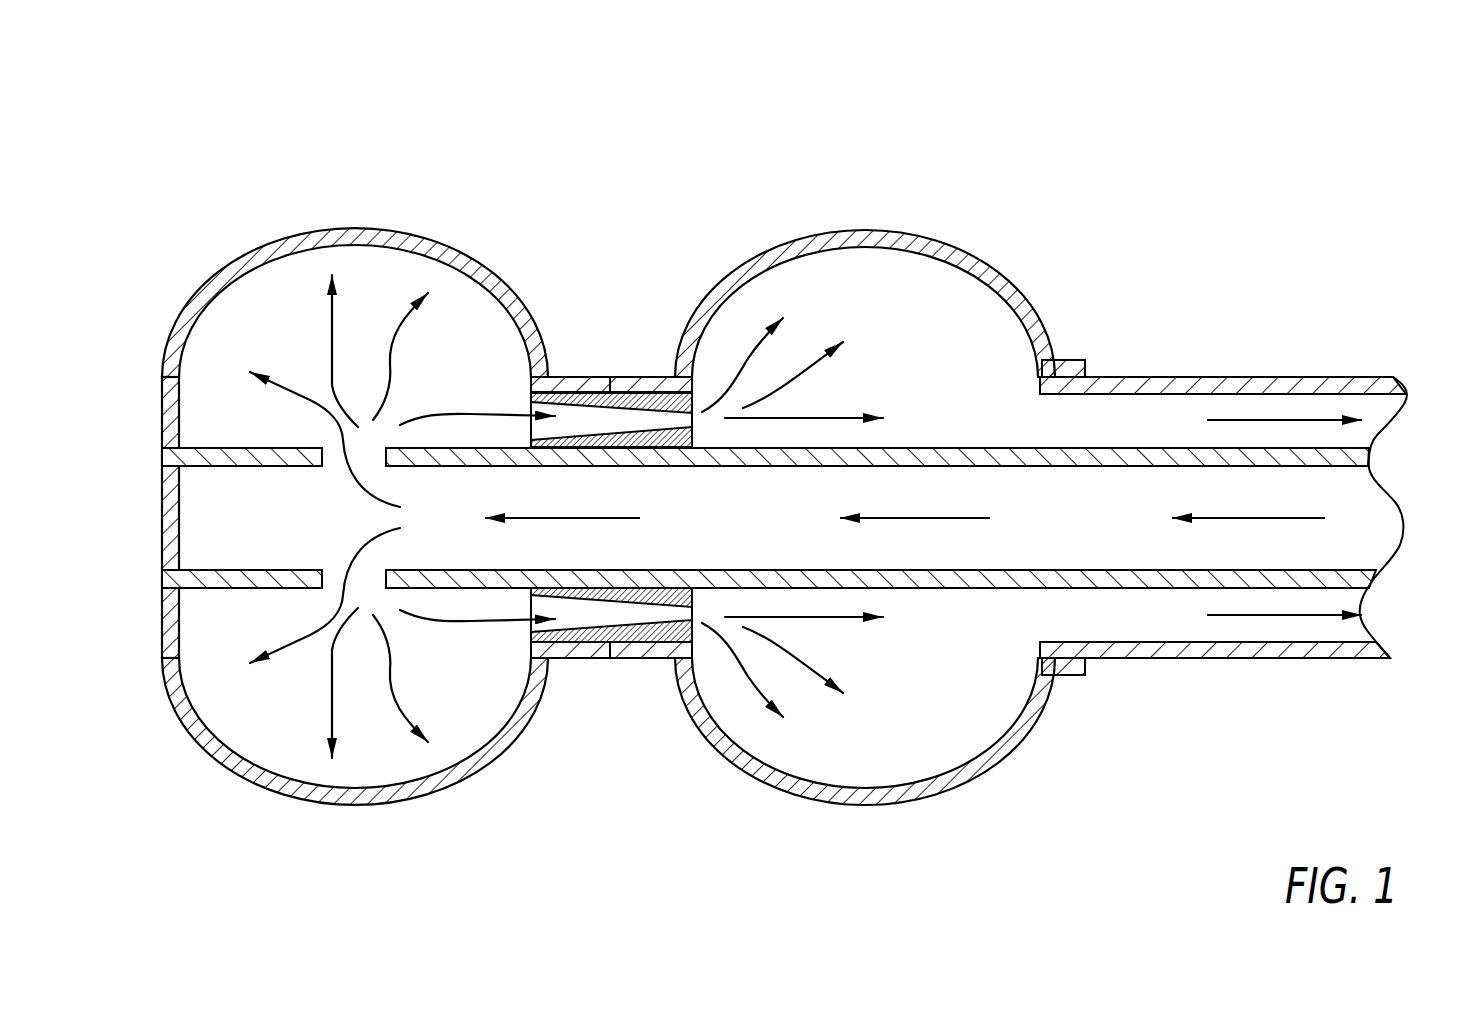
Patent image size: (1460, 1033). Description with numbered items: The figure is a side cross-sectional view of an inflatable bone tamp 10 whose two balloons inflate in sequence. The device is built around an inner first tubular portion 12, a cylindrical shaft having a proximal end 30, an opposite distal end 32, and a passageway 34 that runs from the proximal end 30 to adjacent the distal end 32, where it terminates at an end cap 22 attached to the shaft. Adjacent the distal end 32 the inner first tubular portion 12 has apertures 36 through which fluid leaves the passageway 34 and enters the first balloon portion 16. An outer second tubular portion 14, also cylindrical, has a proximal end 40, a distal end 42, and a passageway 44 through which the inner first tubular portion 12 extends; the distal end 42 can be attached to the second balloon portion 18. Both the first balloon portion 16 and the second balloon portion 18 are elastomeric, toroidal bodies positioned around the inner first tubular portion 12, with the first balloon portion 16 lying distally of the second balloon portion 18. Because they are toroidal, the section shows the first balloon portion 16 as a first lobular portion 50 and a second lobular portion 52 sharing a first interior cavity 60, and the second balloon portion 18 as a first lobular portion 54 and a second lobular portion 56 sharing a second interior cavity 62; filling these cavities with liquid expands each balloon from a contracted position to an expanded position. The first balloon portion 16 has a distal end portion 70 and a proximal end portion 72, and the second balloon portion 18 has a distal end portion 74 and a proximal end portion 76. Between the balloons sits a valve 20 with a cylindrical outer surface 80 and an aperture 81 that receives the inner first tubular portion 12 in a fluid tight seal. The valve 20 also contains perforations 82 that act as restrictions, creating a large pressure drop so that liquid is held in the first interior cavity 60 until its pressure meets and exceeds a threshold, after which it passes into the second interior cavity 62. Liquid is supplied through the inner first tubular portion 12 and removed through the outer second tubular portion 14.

The inflatable bone tamp 10 is at (230, 160).
The inner first tubular portion 12 is at (1105, 447).
The outer second tubular portion 14 is at (1208, 380).
The first balloon portion 16 is at (351, 228).
The second balloon portion 18 is at (867, 230).
The valve 20 is at (625, 660).
The end cap 22 is at (165, 518).
The proximal end 30 is at (1340, 455).
The distal end 32 is at (170, 456).
The passageway 34 is at (1338, 505).
The apertures 36 is at (335, 578).
The proximal end 40 is at (1360, 383).
The distal end 42 is at (1073, 383).
The passageway 44 is at (1283, 410).
The first lobular portion 50 is at (450, 255).
The second lobular portion 52 is at (363, 800).
The first lobular portion 54 is at (990, 270).
The second lobular portion 56 is at (928, 797).
The first interior cavity 60 is at (272, 312).
The second interior cavity 62 is at (795, 290).
The distal end portion 70 is at (170, 590).
The proximal end portion 72 is at (567, 383).
The distal end portion 74 is at (653, 383).
The proximal end portion 76 is at (1076, 678).
The cylindrical outer surface 80 is at (650, 642).
The aperture 81 is at (652, 588).
The perforations 82 is at (597, 408).